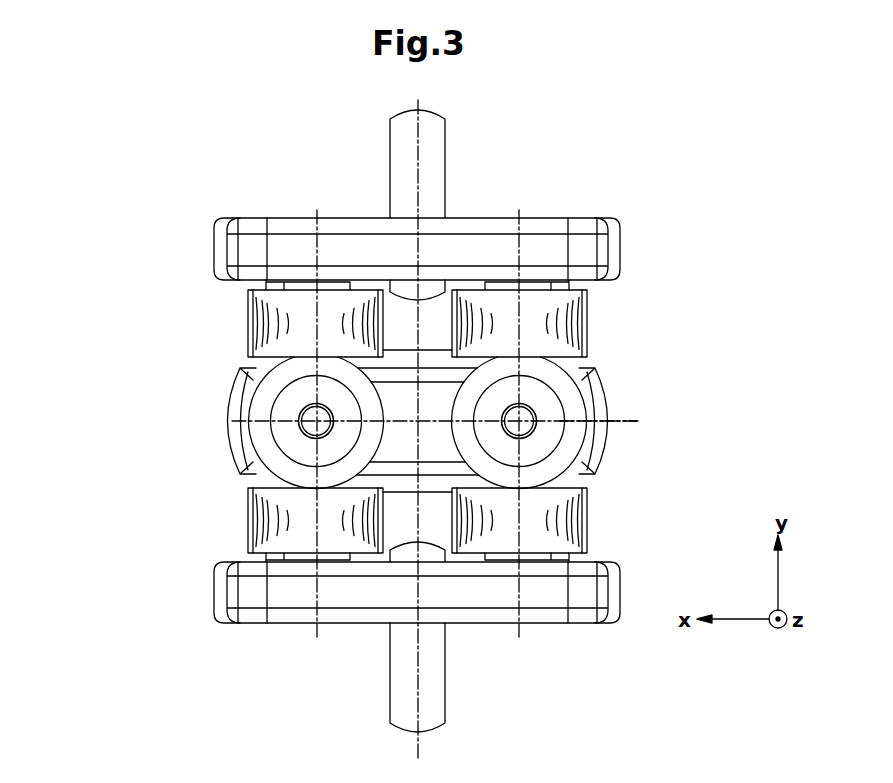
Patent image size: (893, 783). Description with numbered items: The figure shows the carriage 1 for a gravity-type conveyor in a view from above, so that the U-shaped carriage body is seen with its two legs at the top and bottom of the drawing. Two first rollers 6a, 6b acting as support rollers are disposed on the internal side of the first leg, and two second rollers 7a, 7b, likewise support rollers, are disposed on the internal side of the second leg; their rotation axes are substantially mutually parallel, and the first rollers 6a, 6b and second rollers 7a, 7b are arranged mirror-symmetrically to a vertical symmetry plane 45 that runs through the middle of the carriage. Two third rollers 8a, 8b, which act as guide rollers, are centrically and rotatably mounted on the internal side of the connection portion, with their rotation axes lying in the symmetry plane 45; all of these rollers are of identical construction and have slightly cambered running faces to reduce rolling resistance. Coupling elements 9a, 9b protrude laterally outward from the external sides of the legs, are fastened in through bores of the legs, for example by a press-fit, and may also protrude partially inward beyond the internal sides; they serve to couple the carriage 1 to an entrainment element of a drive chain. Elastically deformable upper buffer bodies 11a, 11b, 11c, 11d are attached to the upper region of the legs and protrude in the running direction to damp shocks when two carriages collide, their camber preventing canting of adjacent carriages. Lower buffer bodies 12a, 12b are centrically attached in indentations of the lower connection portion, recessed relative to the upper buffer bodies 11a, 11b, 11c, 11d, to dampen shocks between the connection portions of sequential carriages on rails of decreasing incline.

The carriage 1 is at (236, 142).
The coupling element 9a is at (432, 685).
The coupling element 9b is at (402, 165).
The buffer body 11a is at (600, 597).
The buffer body 11b is at (232, 593).
The buffer body 11c is at (602, 250).
The buffer body 11d is at (230, 252).
The second roller 7a is at (572, 332).
The second roller 7b is at (265, 321).
The first roller 6a is at (565, 522).
The first roller 6b is at (257, 518).
The third roller 8a is at (569, 413).
The third roller 8b is at (260, 432).
The lower buffer body 12a is at (590, 383).
The lower buffer body 12b is at (237, 405).
The symmetry plane 45 is at (617, 422).